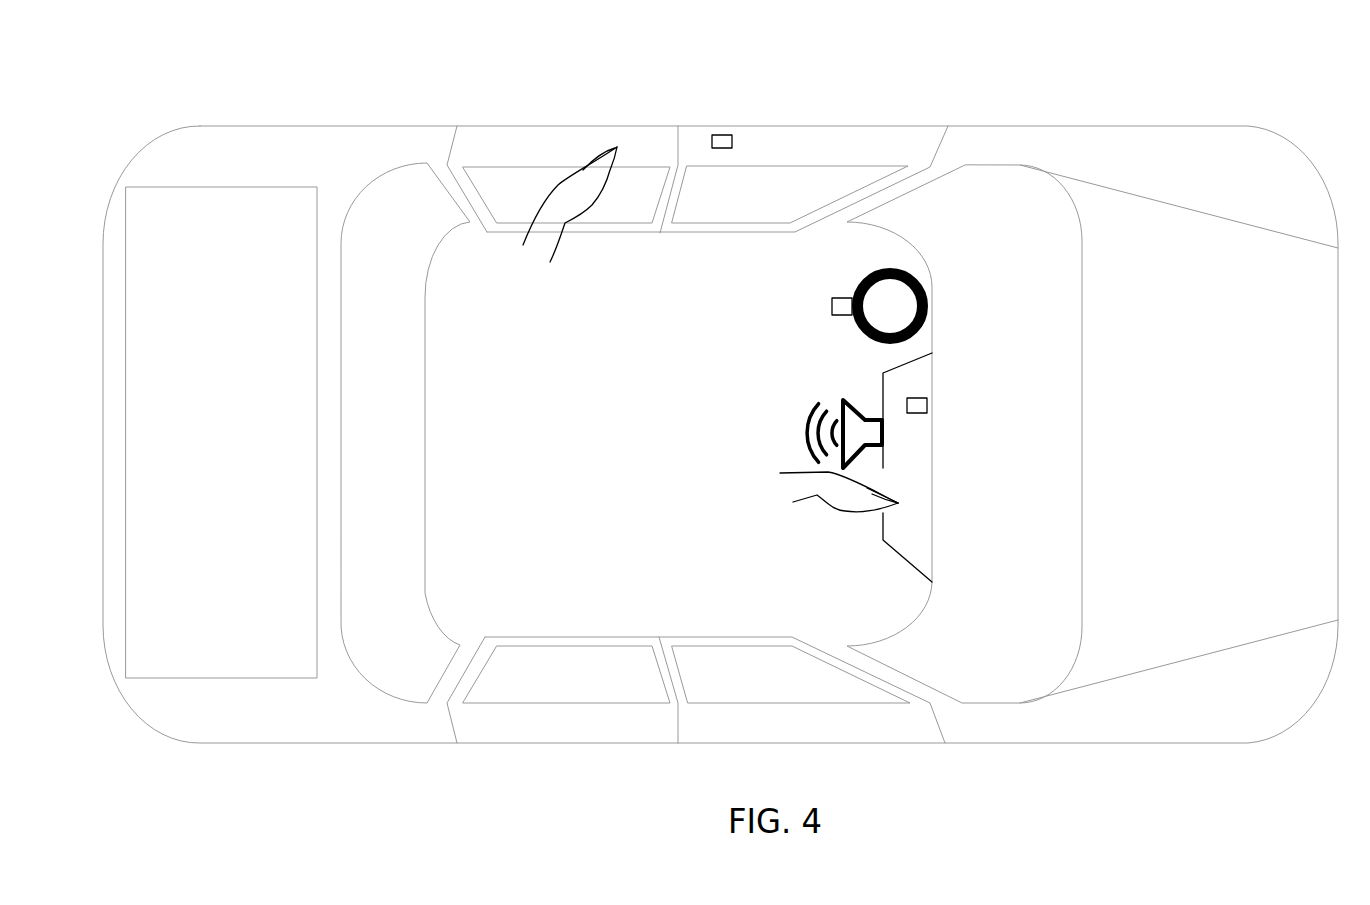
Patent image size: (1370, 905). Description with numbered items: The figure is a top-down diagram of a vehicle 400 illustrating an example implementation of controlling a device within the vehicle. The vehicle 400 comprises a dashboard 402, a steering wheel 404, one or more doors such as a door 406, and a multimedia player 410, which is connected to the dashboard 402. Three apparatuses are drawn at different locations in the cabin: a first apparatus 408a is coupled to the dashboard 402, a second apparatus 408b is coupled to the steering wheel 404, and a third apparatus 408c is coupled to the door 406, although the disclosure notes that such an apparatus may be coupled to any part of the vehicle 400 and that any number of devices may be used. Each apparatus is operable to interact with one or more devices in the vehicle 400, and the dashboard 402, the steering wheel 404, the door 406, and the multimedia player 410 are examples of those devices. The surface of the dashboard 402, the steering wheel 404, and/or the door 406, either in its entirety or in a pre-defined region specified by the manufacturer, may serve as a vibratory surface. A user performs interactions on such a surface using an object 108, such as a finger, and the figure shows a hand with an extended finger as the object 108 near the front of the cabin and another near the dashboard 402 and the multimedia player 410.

The vehicle 400 is at (1100, 97).
The object 108 is at (553, 238).
The dashboard 402 is at (883, 387).
The steering wheel 404 is at (922, 282).
The door 406 is at (838, 150).
The first apparatus 408a is at (917, 398).
The second apparatus 408b is at (838, 298).
The third apparatus 408c is at (722, 135).
The multimedia player 410 is at (843, 397).